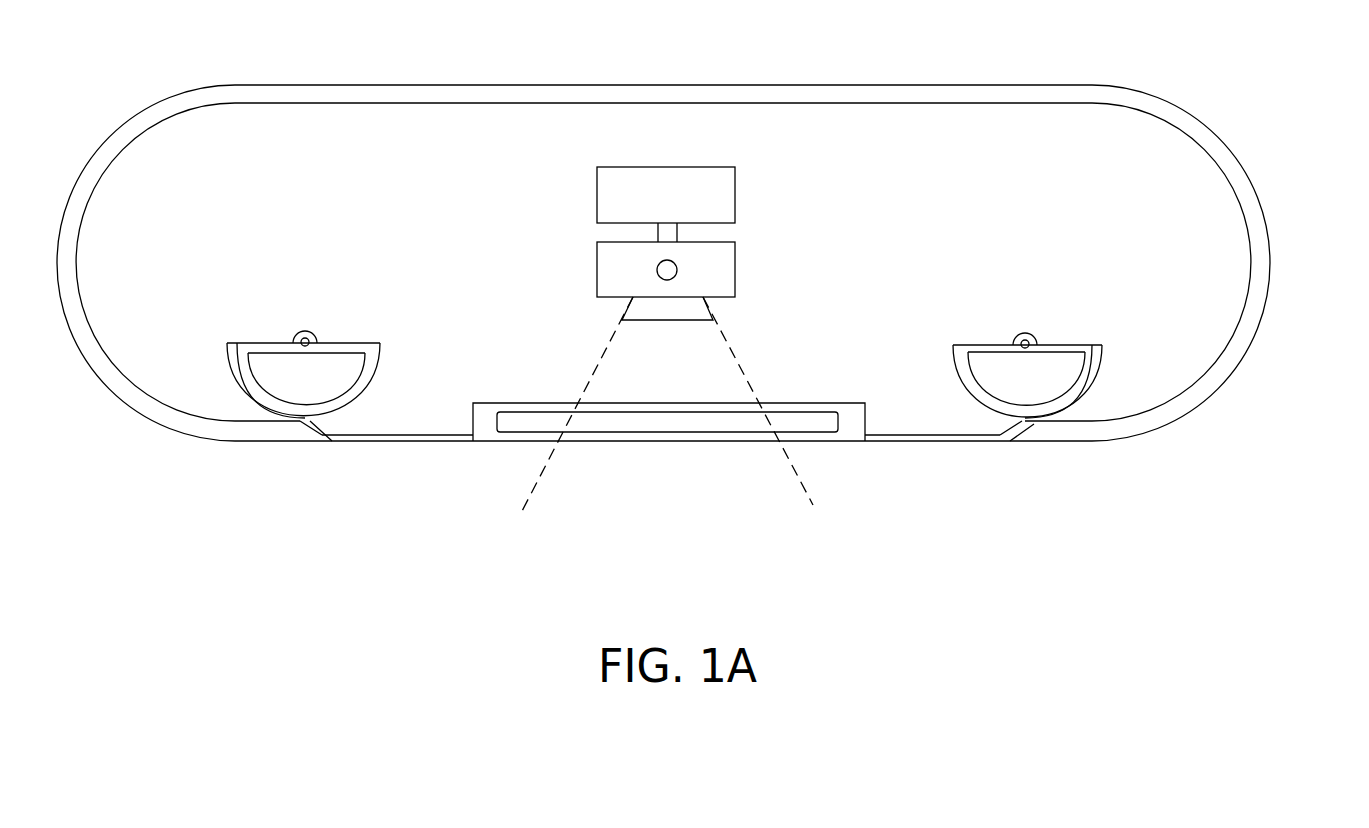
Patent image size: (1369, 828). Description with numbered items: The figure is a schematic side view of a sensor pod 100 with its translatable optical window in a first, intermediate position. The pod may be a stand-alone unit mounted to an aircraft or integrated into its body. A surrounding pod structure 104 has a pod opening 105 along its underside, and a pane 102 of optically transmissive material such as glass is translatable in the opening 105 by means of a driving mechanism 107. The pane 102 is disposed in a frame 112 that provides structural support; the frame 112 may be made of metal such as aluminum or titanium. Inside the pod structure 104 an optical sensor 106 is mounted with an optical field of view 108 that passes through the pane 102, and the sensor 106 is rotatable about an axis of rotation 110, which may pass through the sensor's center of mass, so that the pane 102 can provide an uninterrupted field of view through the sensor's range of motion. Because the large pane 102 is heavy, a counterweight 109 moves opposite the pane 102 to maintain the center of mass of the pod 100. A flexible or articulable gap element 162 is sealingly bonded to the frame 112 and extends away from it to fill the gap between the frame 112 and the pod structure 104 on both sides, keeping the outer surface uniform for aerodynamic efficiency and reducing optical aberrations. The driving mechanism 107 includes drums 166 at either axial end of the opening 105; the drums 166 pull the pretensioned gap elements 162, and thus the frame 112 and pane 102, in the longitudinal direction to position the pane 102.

The sensor pod 100 is at (1173, 448).
The pane 102 is at (818, 432).
The pod structure 104 is at (1270, 270).
The pod opening 105 is at (998, 448).
The optical sensor 106 is at (735, 270).
The driving mechanism 107 is at (735, 193).
The optical field of view 108 is at (738, 368).
The counterweight 109 is at (1058, 335).
The axis of rotation 110 is at (657, 272).
The frame 112 is at (847, 403).
The gap element 162 is at (405, 442).
The drum 166 is at (337, 341).